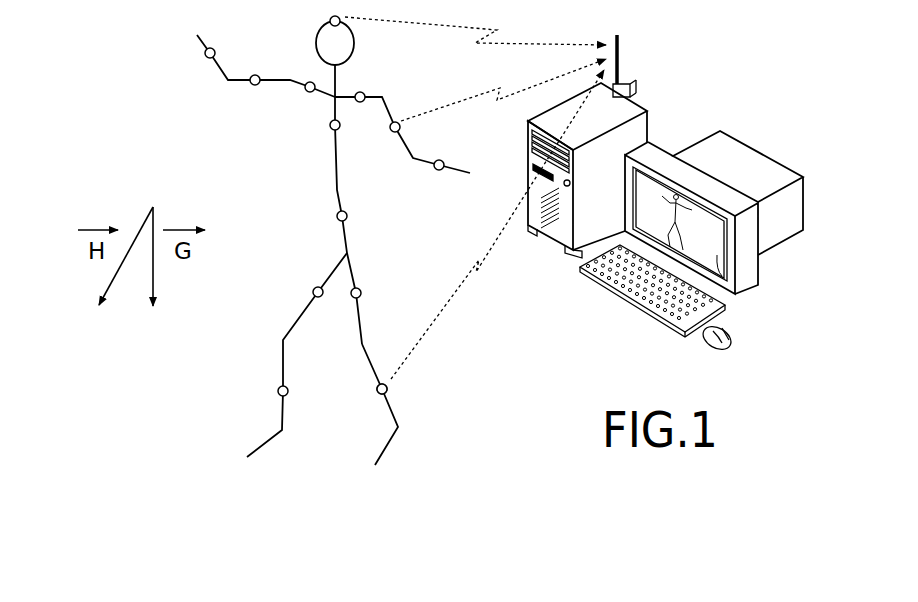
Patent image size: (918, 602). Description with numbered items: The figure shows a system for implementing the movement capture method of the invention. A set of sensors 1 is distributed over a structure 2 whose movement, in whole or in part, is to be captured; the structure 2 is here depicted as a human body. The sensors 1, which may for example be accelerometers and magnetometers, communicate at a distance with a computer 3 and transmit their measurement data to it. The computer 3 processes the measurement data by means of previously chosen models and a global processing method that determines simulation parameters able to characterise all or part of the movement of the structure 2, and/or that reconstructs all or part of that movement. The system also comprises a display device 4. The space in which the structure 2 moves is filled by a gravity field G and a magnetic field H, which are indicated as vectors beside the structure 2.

The sensors 1 is at (331, 212).
The structure 2 is at (405, 408).
The computer 3 is at (588, 212).
The display device 4 is at (740, 293).